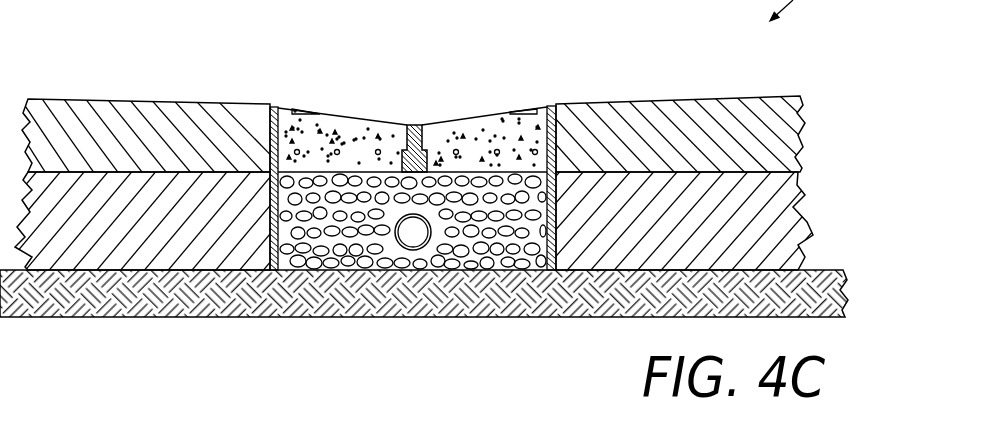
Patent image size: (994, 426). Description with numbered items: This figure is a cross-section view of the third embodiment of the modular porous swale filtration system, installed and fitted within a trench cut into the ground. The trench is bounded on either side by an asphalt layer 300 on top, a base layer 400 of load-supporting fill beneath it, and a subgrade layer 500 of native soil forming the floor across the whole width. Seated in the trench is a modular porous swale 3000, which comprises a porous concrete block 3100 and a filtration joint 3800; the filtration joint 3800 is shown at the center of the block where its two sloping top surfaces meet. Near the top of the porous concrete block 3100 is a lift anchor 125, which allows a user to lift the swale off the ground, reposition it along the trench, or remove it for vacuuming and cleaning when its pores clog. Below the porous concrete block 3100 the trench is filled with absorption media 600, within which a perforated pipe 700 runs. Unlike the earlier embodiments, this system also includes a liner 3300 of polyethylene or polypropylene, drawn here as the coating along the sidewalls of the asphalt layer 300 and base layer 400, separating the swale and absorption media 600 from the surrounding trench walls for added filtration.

The lift anchor 125 is at (308, 102).
The asphalt layer 300 is at (810, 96).
The base layer 400 is at (820, 172).
The subgrade layer 500 is at (852, 270).
The absorption media 600 is at (494, 247).
The perforated pipe 700 is at (417, 237).
The modular porous swale 3000 is at (289, 93).
The porous concrete block 3100 is at (357, 112).
The liner 3300 is at (278, 106).
The filtration joint 3800 is at (421, 113).